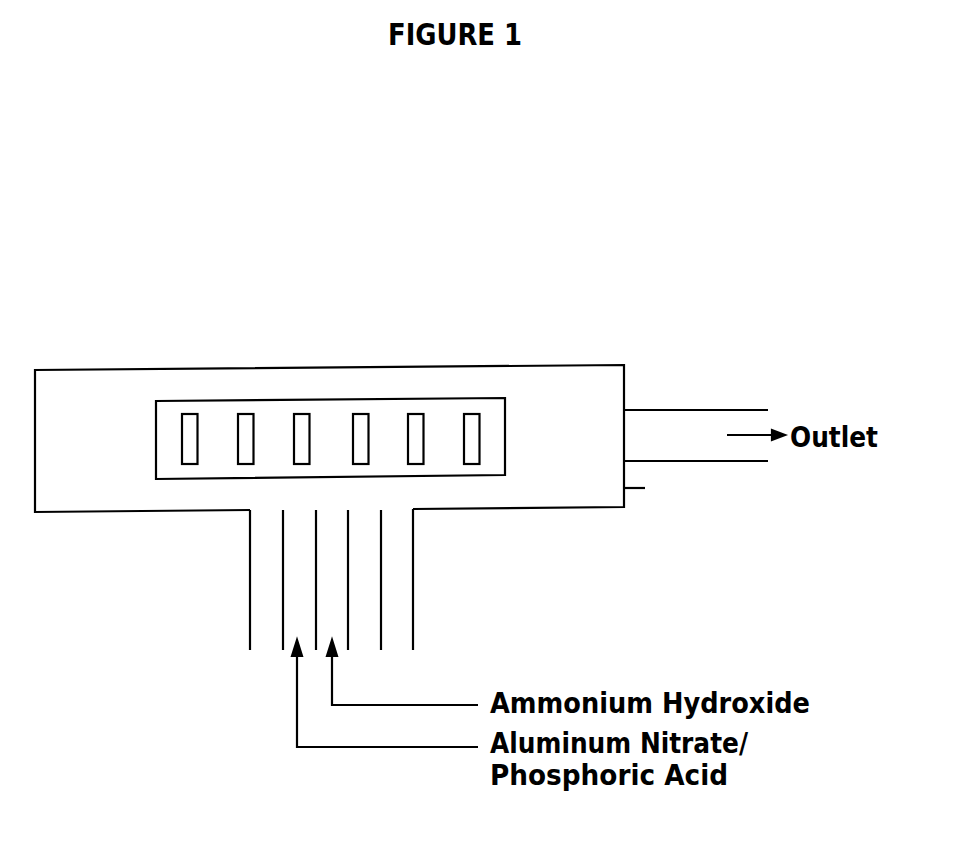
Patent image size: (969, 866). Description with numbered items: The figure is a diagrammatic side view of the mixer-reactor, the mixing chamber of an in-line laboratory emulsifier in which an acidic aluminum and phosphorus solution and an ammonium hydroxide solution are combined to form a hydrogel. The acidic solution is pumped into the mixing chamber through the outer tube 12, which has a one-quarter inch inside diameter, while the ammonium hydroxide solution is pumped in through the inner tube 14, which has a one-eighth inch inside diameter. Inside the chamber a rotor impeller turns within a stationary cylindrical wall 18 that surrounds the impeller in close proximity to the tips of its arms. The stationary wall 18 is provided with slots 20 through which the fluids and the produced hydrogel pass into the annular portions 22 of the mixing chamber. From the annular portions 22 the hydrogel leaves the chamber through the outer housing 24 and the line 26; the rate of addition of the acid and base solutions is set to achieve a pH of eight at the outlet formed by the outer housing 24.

The outer tube 12 is at (293, 614).
The inner tube 14 is at (327, 573).
The stationary cylindrical wall 18 is at (505, 417).
The slots 20 is at (302, 425).
The annular portions 22 is at (70, 405).
The outer housing 24 is at (645, 488).
The line 26 is at (647, 428).